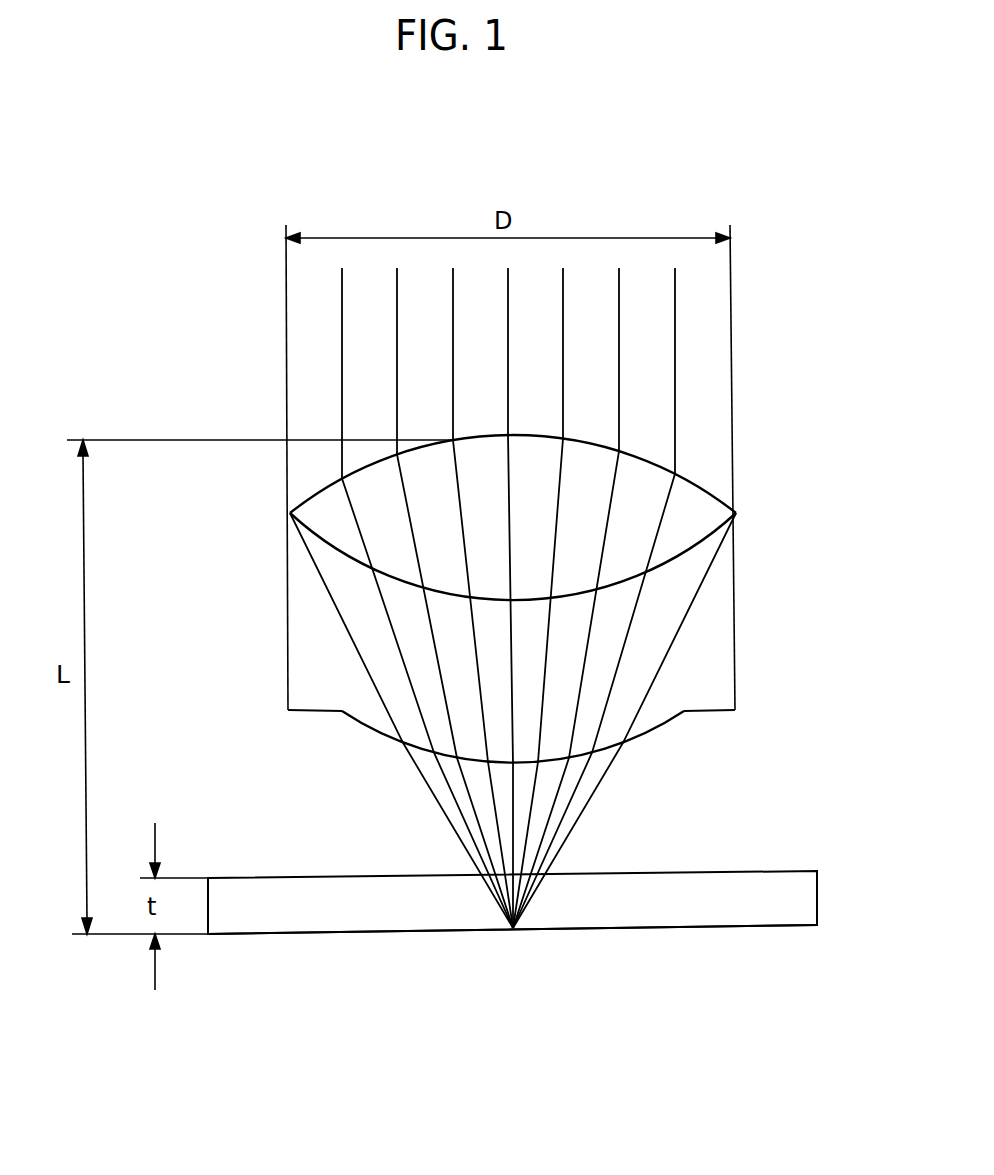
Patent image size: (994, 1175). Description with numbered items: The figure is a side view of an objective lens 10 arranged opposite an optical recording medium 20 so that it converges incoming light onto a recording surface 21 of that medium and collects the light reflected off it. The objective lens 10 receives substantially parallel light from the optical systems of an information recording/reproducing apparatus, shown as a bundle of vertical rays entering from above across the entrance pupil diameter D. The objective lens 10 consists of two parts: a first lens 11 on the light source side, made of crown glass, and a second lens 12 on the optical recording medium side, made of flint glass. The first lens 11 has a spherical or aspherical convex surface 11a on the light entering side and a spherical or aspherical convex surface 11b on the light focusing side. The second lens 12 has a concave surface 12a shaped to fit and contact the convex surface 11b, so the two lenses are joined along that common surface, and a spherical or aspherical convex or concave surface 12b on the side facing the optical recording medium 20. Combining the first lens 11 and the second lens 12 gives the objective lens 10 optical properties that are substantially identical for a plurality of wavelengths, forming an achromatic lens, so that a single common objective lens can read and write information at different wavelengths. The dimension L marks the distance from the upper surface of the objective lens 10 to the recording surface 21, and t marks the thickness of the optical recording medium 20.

The objective lens 10 is at (536, 600).
The first lens 11 is at (507, 517).
The convex surface 11a is at (305, 500).
The convex surface 11b is at (316, 545).
The second lens 12 is at (507, 654).
The concave surface 12a is at (350, 559).
The convex or concave surface 12b is at (373, 731).
The optical recording medium 20 is at (818, 898).
The recording surface 21 is at (763, 925).